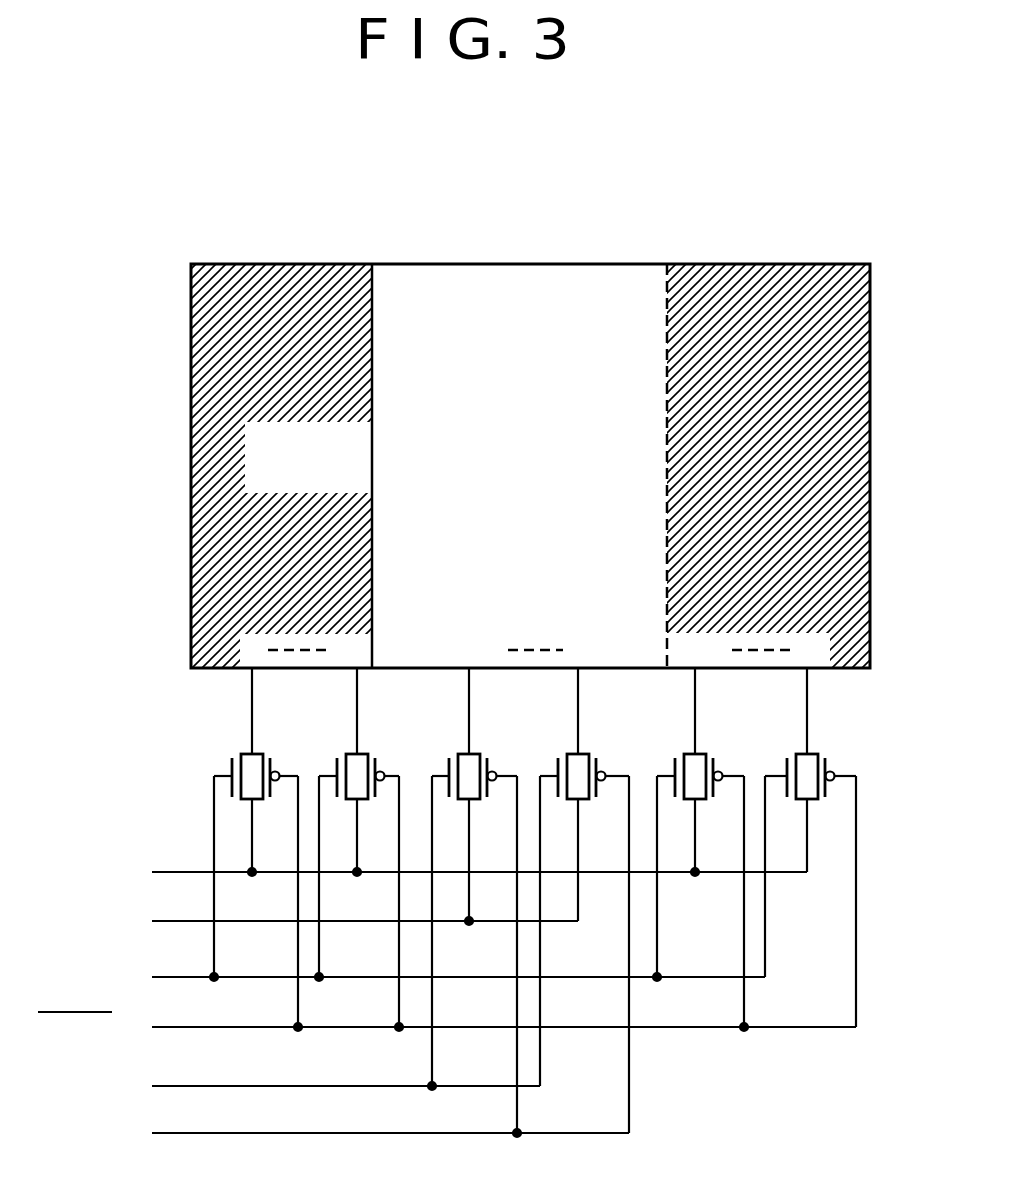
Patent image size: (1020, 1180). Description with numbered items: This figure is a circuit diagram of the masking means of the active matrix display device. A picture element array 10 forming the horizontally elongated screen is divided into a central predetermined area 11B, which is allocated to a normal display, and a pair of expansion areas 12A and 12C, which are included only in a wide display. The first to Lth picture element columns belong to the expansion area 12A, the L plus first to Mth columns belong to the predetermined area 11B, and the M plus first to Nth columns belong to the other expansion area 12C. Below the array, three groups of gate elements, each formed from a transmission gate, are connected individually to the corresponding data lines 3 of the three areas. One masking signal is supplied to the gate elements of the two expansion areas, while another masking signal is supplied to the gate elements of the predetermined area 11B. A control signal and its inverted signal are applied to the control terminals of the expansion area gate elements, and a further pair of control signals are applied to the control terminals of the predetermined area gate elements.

The picture element array 10 is at (191, 464).
The expansion area 12A is at (262, 264).
The predetermined area 11B is at (518, 266).
The expansion area 12C is at (780, 264).
The data line 3 is at (251, 711).